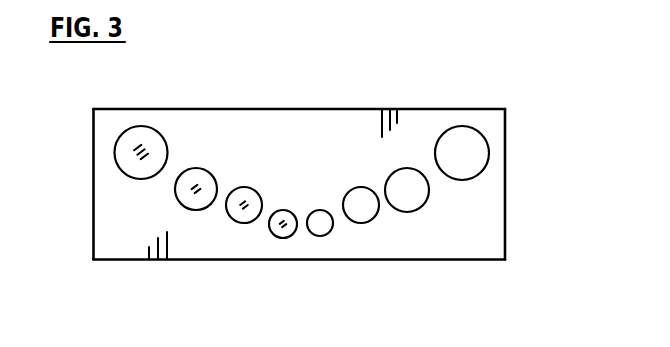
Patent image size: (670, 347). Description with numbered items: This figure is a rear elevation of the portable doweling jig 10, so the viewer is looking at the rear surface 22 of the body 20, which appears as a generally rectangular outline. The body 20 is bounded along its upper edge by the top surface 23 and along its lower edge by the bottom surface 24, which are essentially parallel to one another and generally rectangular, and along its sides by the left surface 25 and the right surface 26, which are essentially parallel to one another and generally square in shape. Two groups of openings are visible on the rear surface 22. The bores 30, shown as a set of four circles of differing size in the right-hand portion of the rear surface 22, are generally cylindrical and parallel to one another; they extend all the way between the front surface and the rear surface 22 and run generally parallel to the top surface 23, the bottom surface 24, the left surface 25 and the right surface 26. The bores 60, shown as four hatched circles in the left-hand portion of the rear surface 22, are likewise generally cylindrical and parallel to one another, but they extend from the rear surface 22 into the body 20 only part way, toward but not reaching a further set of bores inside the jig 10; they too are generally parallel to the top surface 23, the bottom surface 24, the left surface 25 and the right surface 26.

The portable doweling jig 10 is at (576, 306).
The body 20 is at (482, 291).
The rear surface 22 is at (342, 132).
The top surface 23 is at (310, 102).
The bottom surface 24 is at (201, 267).
The left surface 25 is at (514, 189).
The right surface 26 is at (85, 193).
The bores 30 is at (460, 183).
The bores 60 is at (284, 210).